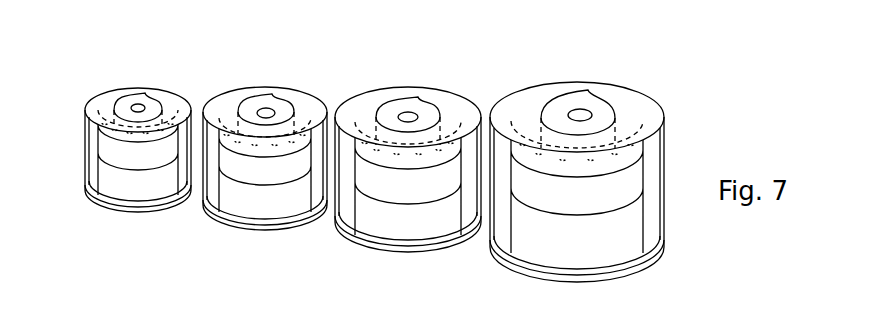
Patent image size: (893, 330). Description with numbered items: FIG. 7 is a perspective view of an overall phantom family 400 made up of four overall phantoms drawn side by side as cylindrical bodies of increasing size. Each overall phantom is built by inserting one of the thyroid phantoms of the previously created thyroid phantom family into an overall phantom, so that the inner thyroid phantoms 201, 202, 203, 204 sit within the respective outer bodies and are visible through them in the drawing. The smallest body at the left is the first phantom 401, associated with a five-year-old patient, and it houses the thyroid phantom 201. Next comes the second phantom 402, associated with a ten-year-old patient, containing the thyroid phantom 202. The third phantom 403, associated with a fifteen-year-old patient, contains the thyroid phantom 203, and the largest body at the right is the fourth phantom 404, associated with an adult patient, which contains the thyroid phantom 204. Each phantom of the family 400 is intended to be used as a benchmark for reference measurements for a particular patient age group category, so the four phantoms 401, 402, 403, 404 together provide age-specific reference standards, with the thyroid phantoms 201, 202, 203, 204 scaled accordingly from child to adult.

The overall phantom family 400 is at (343, 183).
The first phantom 401 is at (121, 153).
The second phantom 402 is at (258, 158).
The third phantom 403 is at (403, 171).
The fourth phantom 404 is at (572, 182).
The first cartridge body 201 is at (140, 192).
The second cartridge body 202 is at (273, 210).
The third cartridge body 203 is at (412, 237).
The fourth cartridge body 204 is at (590, 257).